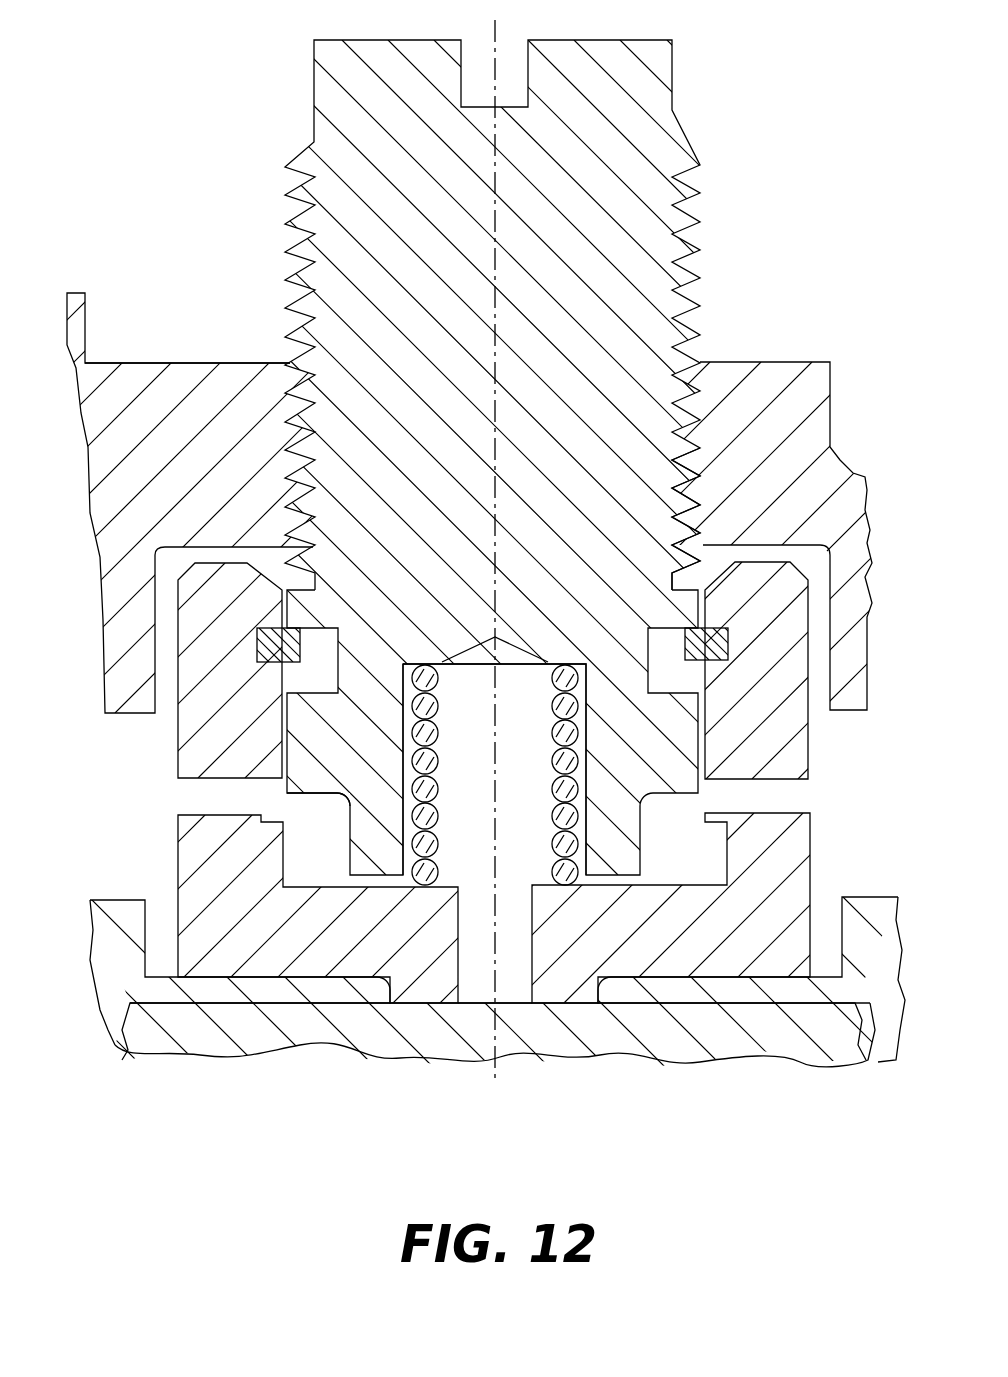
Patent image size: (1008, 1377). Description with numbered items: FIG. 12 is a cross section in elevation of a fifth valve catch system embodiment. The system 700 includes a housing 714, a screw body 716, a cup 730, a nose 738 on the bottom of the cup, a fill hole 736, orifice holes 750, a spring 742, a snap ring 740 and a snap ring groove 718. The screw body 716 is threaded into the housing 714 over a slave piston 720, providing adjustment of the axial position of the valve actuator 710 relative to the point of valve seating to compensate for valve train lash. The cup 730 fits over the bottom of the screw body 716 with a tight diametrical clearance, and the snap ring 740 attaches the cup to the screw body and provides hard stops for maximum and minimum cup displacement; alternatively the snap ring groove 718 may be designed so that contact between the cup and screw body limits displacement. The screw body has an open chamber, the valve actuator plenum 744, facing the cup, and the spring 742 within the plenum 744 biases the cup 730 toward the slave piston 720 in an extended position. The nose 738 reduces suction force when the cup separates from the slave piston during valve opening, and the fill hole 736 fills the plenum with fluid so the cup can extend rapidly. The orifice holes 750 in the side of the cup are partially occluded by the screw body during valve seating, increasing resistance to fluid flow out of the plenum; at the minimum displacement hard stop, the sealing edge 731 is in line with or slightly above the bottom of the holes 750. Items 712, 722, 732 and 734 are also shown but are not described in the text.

The system 700 is at (224, 276).
The valve actuator 710 is at (872, 225).
The adjustment screw 712 is at (668, 118).
The housing 714 is at (167, 385).
The screw body 716 is at (498, 273).
The snap ring groove 718 is at (338, 658).
The slave piston 720 is at (860, 897).
The sleeve 722 is at (925, 767).
The cup 730 is at (786, 823).
The sealing edge 731 is at (299, 804).
The seal 732 is at (257, 641).
The threads 734 is at (716, 585).
The fill hole 736 is at (516, 967).
The nose 738 is at (423, 1003).
The snap ring 740 is at (690, 668).
The spring 742 is at (578, 702).
The valve actuator plenum 744 is at (467, 677).
The orifice holes 750 is at (180, 788).